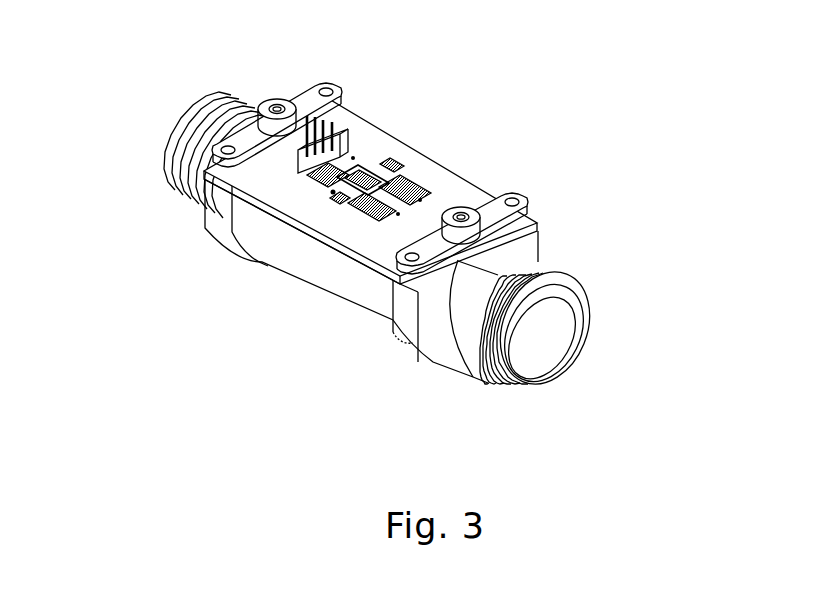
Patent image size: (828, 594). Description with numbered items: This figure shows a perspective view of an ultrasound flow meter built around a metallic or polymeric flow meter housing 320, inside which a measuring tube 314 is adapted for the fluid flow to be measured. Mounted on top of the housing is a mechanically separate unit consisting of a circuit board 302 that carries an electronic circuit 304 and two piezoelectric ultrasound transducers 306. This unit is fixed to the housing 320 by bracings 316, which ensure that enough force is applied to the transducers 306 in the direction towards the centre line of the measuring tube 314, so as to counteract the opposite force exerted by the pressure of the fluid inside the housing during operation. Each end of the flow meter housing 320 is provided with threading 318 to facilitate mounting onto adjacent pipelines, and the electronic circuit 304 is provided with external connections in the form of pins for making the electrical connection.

The circuit board 302 is at (452, 190).
The electronic circuit 304 is at (368, 185).
The piezoelectric ultrasound transducers 306 is at (283, 107).
The measuring tube 314 is at (583, 370).
The bracings 316 is at (412, 345).
The threading 318 is at (177, 173).
The flow meter housing 320 is at (360, 283).